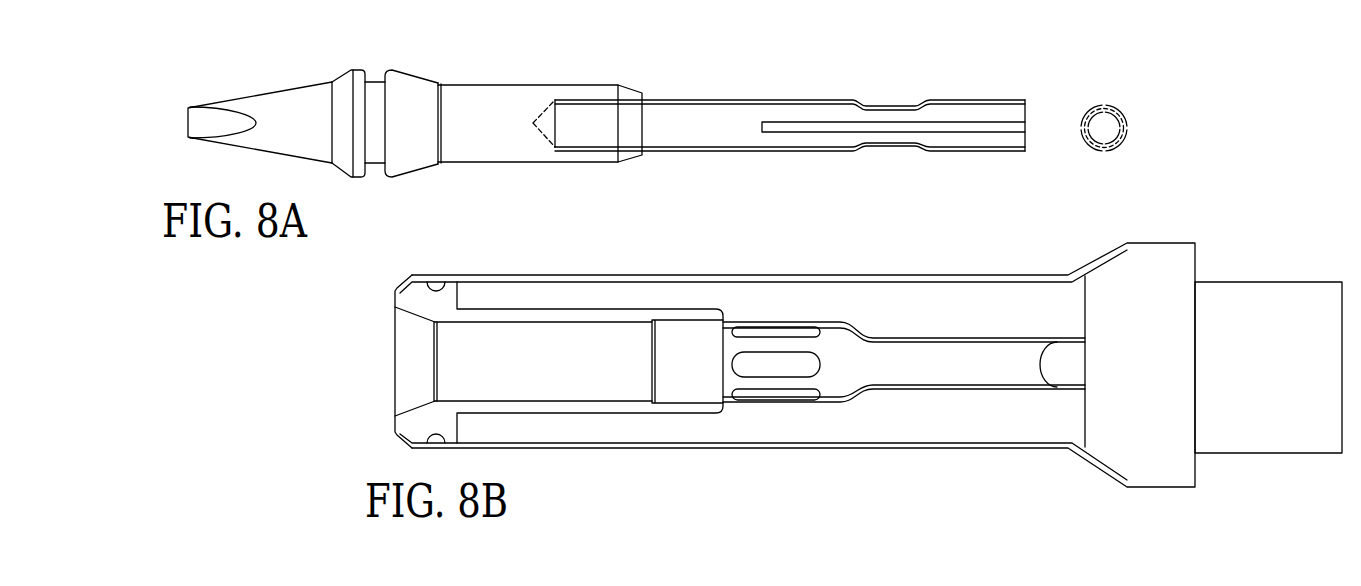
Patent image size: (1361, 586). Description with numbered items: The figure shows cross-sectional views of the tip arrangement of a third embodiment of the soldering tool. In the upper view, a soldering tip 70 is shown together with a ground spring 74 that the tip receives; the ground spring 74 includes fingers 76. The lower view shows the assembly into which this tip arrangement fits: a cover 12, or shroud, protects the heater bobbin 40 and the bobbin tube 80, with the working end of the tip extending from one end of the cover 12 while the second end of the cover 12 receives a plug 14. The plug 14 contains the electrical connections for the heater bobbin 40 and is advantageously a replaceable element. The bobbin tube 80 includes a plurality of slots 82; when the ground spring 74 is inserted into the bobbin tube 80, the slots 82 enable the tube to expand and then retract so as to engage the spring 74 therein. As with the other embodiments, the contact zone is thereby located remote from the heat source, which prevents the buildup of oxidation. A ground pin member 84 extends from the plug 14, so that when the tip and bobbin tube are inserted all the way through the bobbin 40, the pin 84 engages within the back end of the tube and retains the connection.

In FIG. 8B, the cover 12 is at (960, 275).
In FIG. 8B, the plug 14 is at (1265, 307).
In FIG. 8B, the heater bobbin 40 is at (418, 426).
In FIG. 8A, the soldering tip 70 is at (483, 105).
In FIG. 8A, the ground spring 74 is at (777, 102).
In FIG. 8A, the fingers 76 is at (997, 102).
In FIG. 8B, the bobbin tube 80 is at (873, 388).
In FIG. 8B, the slots 82 is at (777, 397).
In FIG. 8B, the ground pin member 84 is at (1052, 367).